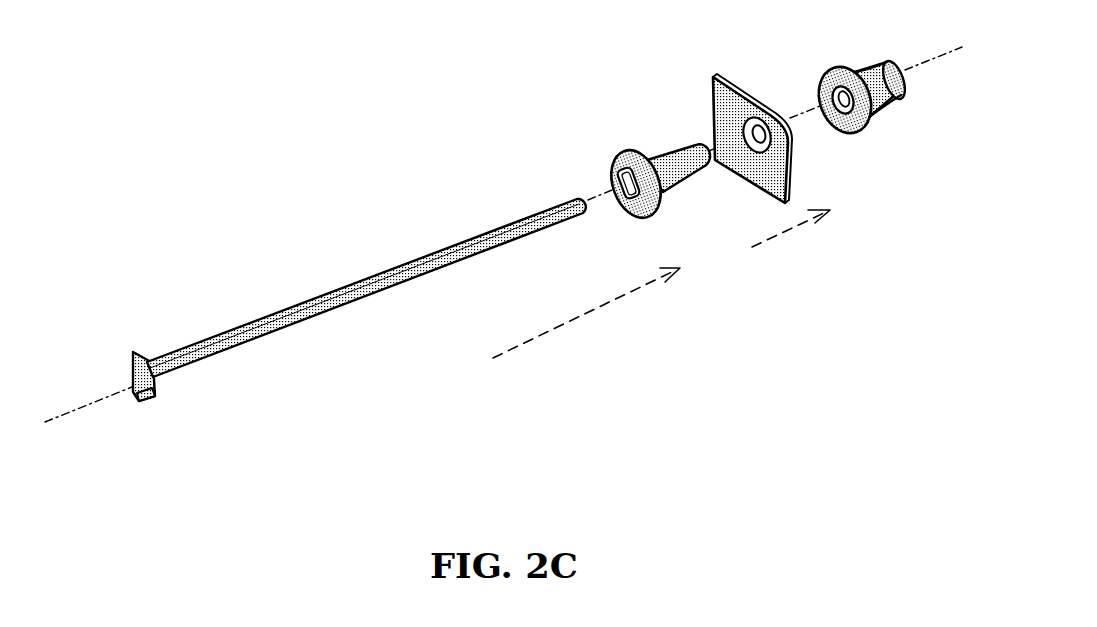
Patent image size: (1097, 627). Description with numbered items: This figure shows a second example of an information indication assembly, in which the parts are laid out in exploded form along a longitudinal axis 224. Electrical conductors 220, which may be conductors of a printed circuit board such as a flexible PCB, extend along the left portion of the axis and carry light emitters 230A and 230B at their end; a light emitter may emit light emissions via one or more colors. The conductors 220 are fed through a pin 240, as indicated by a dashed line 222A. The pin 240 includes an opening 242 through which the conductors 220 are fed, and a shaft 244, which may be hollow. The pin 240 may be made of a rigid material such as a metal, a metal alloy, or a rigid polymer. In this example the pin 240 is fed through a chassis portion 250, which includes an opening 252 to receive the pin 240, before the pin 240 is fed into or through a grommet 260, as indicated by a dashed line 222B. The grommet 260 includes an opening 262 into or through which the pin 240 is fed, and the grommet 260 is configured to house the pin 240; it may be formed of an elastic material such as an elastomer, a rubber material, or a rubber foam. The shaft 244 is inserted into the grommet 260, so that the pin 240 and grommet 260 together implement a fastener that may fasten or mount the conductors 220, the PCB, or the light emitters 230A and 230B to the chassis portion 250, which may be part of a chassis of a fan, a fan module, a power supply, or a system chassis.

The electrical conductors 220 is at (222, 336).
The dashed line 222A is at (586, 313).
The dashed line 222B is at (790, 227).
The longitudinal axis 224 is at (82, 412).
The light emitter 230A is at (148, 364).
The light emitter 230B is at (153, 397).
The pin 240 is at (633, 151).
The opening 242 is at (621, 183).
The shaft 244 is at (675, 153).
The chassis portion 250 is at (712, 108).
The opening 252 is at (749, 126).
The grommet 260 is at (867, 125).
The opening 262 is at (836, 98).